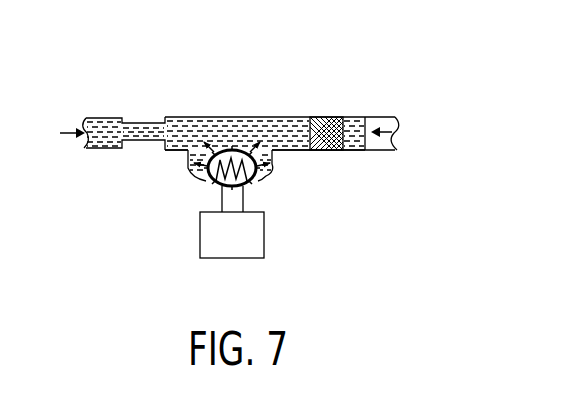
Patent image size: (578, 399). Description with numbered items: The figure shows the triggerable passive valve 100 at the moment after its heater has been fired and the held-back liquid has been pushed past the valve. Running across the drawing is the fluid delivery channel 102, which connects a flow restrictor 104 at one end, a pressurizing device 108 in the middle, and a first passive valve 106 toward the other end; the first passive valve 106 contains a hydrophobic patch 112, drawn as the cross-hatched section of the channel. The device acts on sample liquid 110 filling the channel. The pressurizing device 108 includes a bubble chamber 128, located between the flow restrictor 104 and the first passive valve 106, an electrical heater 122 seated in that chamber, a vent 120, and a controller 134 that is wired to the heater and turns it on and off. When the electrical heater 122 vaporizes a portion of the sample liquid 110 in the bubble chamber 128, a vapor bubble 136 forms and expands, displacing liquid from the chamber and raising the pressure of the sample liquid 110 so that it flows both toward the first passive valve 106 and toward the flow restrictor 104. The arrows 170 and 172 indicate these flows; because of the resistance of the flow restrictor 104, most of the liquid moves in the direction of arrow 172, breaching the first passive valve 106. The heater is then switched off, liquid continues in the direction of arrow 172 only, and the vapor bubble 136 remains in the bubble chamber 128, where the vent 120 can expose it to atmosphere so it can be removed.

The triggerable passive valve 100 is at (252, 141).
The fluid delivery channel 102 is at (192, 117).
The flow restrictor 104 is at (143, 117).
The first passive valve 106 is at (327, 150).
The pressurizing device 108 is at (363, 210).
The sample liquid 110 is at (232, 150).
The hydrophobic patch 112 is at (322, 118).
The vent 120 is at (197, 173).
The electrical heater 122 is at (212, 182).
The bubble chamber 128 is at (262, 157).
The controller 134 is at (230, 258).
The vapor bubble 136 is at (254, 182).
The arrow 170 is at (72, 131).
The arrow 172 is at (362, 74).